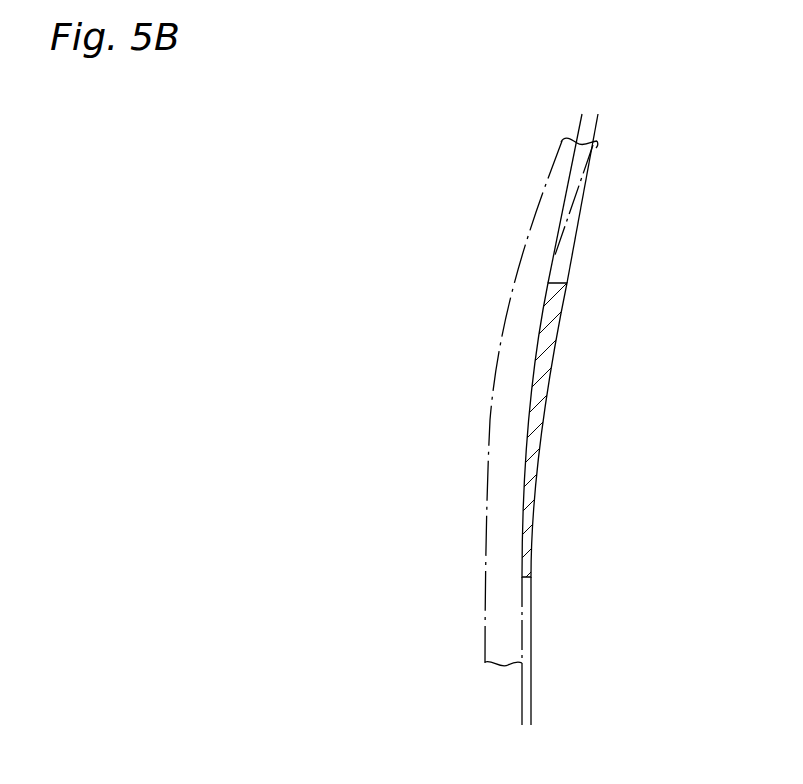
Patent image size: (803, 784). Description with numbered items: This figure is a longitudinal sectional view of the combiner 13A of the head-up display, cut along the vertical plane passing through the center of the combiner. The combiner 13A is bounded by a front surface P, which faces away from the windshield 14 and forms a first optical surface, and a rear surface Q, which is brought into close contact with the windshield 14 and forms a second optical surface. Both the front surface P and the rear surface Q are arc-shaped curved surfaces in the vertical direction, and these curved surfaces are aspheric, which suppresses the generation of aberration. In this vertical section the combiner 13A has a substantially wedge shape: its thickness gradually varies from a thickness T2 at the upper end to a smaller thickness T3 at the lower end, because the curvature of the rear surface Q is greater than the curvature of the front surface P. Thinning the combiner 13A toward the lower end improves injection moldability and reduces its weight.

The windshield 14 is at (521, 248).
The combiner 13A is at (557, 282).
The front surface P is at (540, 443).
The rear surface Q is at (531, 401).
The thickness at upper end T2 is at (508, 176).
The thickness at lower end T3 is at (478, 698).